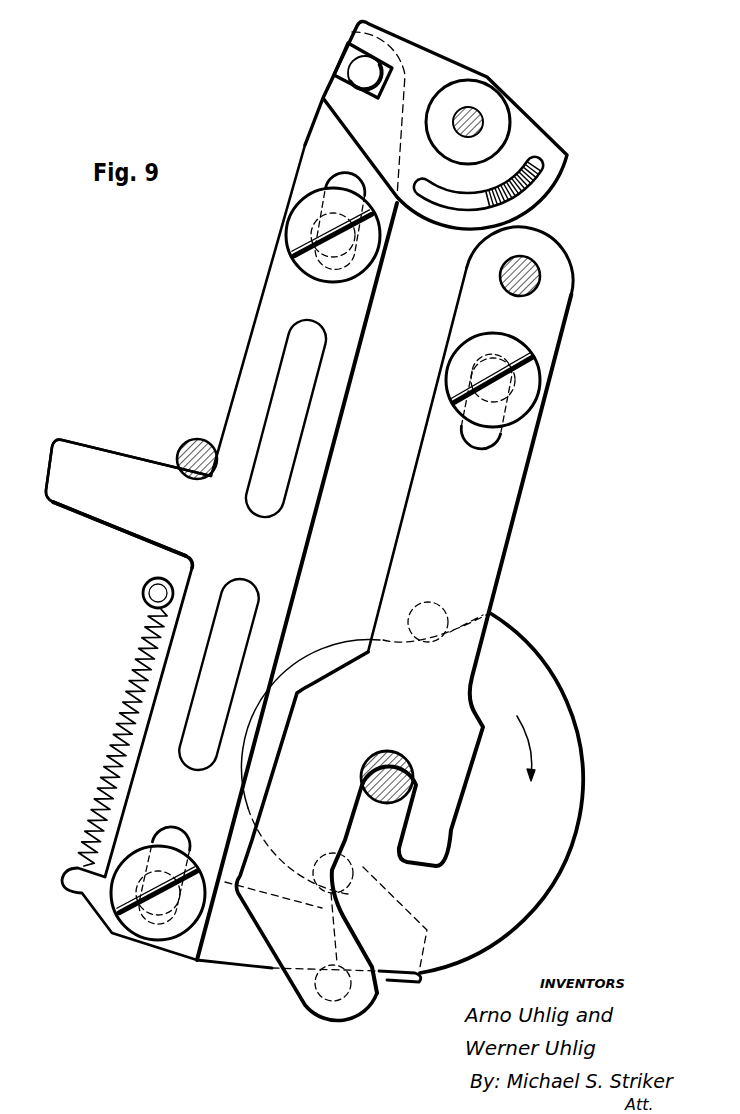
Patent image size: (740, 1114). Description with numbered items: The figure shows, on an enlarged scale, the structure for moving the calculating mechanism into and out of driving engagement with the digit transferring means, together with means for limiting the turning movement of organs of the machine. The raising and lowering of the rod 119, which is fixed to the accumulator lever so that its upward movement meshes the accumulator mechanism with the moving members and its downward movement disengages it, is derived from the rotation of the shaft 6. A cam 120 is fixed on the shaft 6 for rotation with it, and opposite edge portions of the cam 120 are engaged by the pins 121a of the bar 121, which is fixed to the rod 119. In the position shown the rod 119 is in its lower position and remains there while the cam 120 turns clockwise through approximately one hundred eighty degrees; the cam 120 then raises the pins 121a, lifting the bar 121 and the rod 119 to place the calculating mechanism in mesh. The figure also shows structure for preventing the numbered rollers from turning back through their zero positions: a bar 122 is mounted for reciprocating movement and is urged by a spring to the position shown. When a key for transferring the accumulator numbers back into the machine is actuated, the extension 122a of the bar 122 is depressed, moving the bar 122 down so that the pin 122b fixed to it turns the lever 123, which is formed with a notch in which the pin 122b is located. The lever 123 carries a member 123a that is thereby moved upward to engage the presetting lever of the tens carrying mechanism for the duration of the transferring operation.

The shaft 6 is at (400, 779).
The rod 119 is at (545, 270).
The cam 120 is at (557, 727).
The bar 121 is at (494, 555).
The pins 121a is at (437, 617).
The bar 122 is at (265, 337).
The extension 122a is at (80, 497).
The pin 122b is at (360, 68).
The lever 123 is at (533, 138).
The member 123a is at (527, 192).